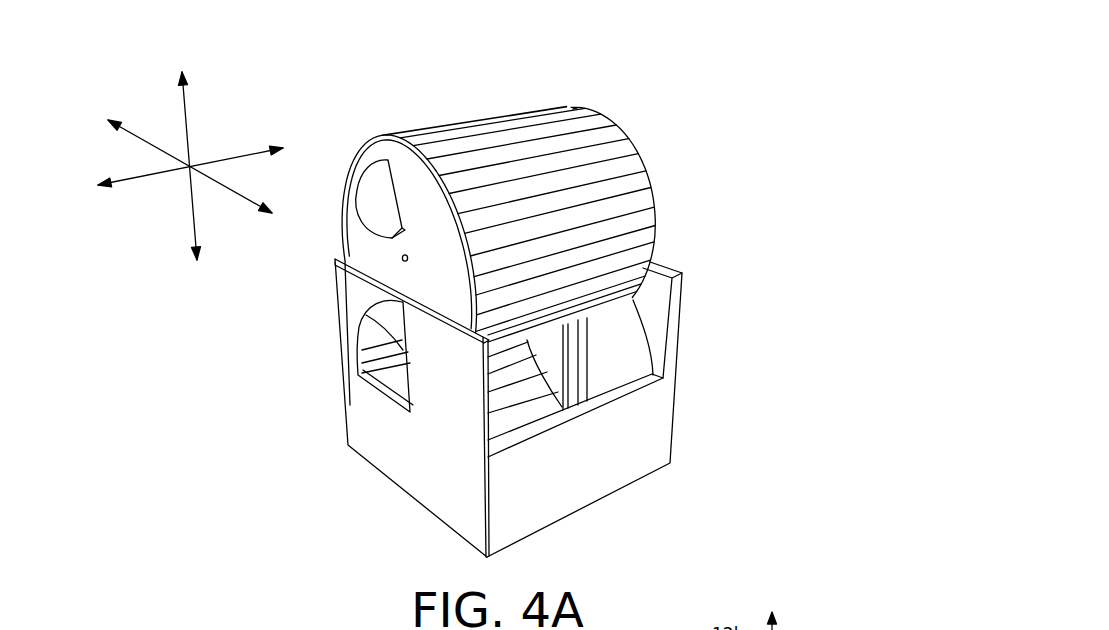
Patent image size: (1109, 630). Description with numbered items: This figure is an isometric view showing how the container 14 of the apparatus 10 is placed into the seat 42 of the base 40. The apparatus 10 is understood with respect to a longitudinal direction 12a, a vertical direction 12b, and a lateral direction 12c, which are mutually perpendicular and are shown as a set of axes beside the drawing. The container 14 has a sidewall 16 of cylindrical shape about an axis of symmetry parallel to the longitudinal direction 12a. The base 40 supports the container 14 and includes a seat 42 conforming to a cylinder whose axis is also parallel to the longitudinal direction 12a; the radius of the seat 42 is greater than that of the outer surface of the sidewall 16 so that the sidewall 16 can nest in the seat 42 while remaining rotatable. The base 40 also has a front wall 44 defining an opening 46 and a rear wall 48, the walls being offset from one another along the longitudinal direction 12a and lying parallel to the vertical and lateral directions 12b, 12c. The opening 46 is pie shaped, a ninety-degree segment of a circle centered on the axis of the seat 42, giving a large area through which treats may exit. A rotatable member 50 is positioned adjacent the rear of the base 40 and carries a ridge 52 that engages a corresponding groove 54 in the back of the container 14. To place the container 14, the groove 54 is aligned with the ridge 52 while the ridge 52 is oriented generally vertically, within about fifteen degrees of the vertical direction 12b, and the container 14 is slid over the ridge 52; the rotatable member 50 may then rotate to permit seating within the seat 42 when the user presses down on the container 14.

The apparatus 10 is at (289, 318).
The longitudinal direction 12a is at (243, 156).
The vertical direction 12b is at (183, 101).
The lateral direction 12c is at (148, 145).
The container 14 is at (522, 234).
The sidewall 16 is at (600, 159).
The base 40 is at (607, 450).
The seat 42 is at (505, 410).
The front wall 44 is at (366, 412).
The opening 46 is at (357, 325).
The rear wall 48 is at (666, 300).
The rotatable member 50 is at (628, 338).
The ridge 52 is at (577, 372).
The groove 54 is at (578, 109).